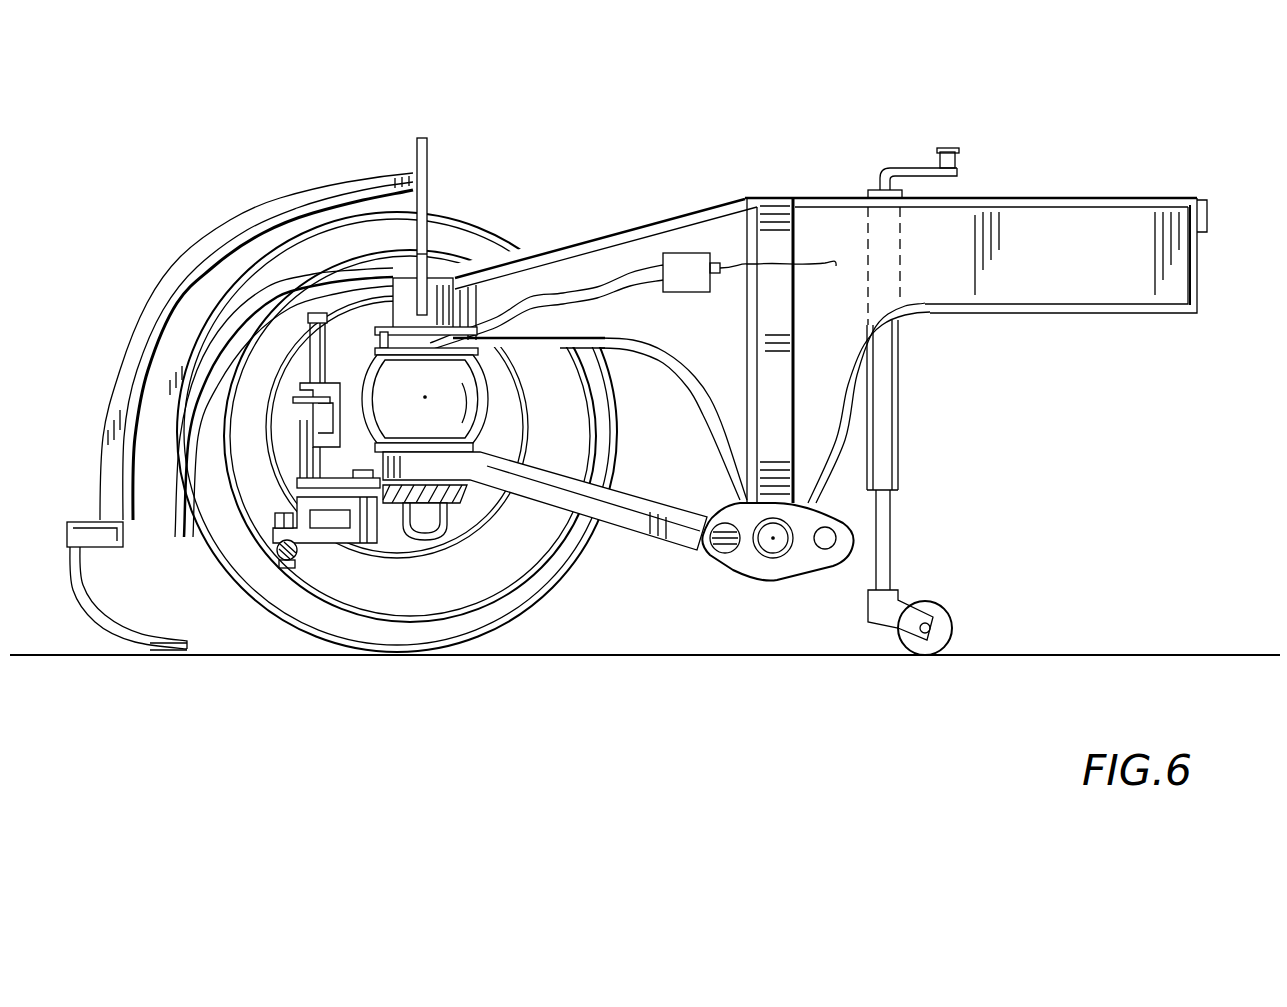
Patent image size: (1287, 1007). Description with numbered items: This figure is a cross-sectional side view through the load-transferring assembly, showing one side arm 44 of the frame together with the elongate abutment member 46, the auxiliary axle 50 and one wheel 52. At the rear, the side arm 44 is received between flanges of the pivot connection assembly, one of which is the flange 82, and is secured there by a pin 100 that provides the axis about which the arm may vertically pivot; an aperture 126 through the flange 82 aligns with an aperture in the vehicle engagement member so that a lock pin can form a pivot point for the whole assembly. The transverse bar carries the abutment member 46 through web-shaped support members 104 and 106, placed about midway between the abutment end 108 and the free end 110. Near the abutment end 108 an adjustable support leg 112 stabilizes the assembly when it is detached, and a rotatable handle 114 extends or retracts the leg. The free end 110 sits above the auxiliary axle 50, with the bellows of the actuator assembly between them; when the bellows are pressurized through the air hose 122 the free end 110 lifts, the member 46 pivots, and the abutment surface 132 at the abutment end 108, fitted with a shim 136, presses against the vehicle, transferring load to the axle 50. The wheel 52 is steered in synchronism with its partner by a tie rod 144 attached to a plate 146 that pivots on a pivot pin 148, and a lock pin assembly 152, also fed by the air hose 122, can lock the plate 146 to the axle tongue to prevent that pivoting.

The side arm 44 is at (645, 520).
The elongate abutment member 46 is at (1040, 263).
The auxiliary axle 50 is at (437, 537).
The wheel 52 is at (288, 447).
The flange 82 is at (790, 567).
The pin 100 is at (730, 560).
The support member 104 is at (767, 415).
The support member 106 is at (812, 428).
The abutment end 108 is at (1142, 197).
The free end 110 is at (440, 277).
The adjustable support leg 112 is at (900, 385).
The rotatable handle 114 is at (918, 160).
The air hose 122 is at (840, 257).
The aperture 126 is at (837, 540).
The abutment surface 132 is at (1197, 273).
The shim 136 is at (1208, 214).
The tie rod 144 is at (273, 557).
The plate 146 is at (320, 543).
The pivot pin 148 is at (373, 550).
The lock pin assembly 152 is at (298, 333).